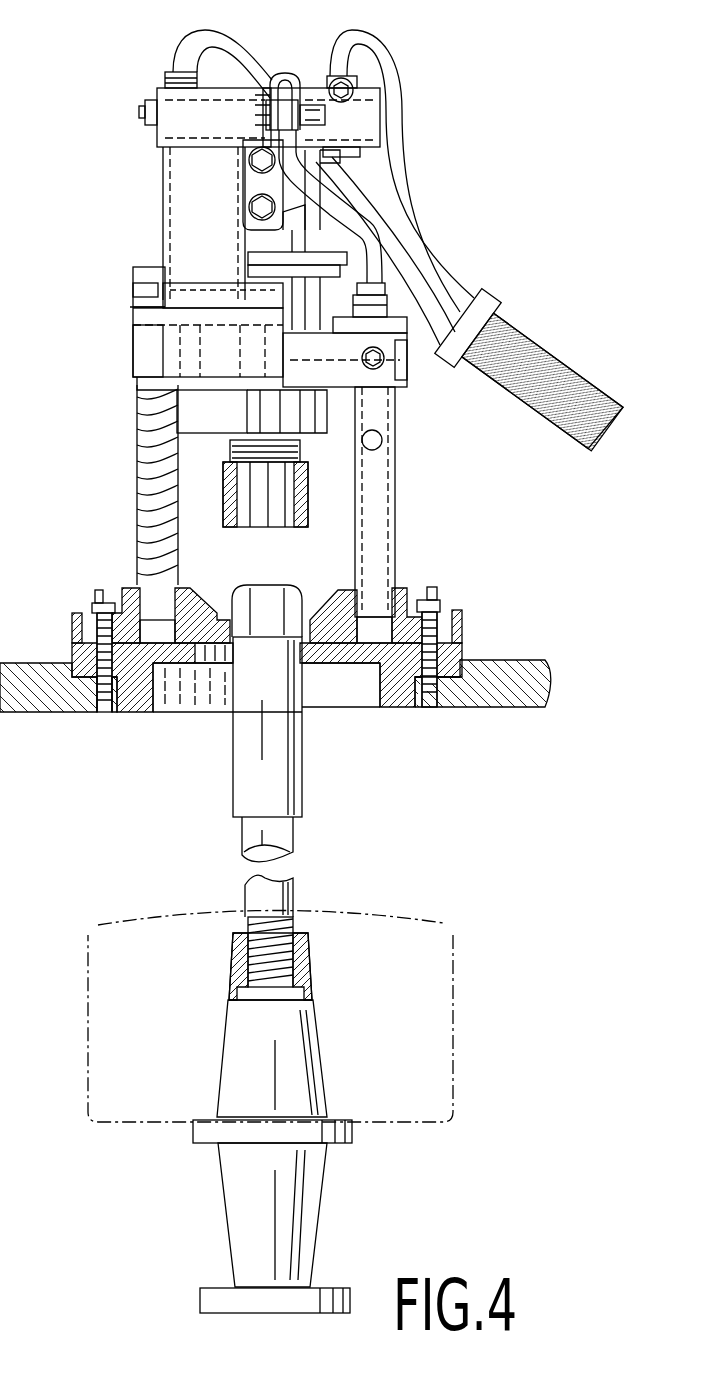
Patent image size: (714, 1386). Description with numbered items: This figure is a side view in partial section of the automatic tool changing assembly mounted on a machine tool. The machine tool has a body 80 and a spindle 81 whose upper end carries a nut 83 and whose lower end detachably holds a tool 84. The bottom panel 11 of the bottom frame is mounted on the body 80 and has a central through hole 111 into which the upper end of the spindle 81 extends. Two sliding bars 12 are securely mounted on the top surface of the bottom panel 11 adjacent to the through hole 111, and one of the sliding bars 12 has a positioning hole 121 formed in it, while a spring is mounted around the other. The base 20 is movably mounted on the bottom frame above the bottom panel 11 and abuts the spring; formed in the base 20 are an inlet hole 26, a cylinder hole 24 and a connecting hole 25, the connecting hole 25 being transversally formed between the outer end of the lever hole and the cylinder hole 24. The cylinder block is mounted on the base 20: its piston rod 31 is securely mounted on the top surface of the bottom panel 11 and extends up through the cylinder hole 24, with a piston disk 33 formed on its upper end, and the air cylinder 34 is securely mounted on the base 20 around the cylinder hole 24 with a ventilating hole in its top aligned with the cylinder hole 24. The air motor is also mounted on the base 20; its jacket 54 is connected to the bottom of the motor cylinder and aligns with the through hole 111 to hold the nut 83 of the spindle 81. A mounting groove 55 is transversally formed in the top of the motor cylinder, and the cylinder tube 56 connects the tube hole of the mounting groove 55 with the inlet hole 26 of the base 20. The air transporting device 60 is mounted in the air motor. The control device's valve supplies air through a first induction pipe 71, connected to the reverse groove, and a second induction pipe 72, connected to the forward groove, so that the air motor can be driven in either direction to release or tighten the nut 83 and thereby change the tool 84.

The bottom panel 11 is at (462, 622).
The sliding bar 12 is at (380, 537).
The base 20 is at (109, 340).
The cylinder hole 24 is at (187, 352).
The connecting hole 25 is at (413, 373).
The inlet hole 26 is at (432, 275).
The piston rod 31 is at (207, 407).
The piston disk 33 is at (185, 290).
The air cylinder 34 is at (173, 172).
The jacket 54 is at (268, 515).
The mounting groove 55 is at (370, 107).
The cylinder tube 56 is at (360, 213).
The air transporting device 60 is at (128, 100).
The first induction pipe 71 is at (213, 30).
The second induction pipe 72 is at (377, 33).
The body 80 is at (527, 663).
The spindle 81 is at (293, 763).
The nut 83 is at (270, 590).
The tool 84 is at (310, 1052).
The through hole 111 is at (296, 652).
The positioning hole 121 is at (380, 443).